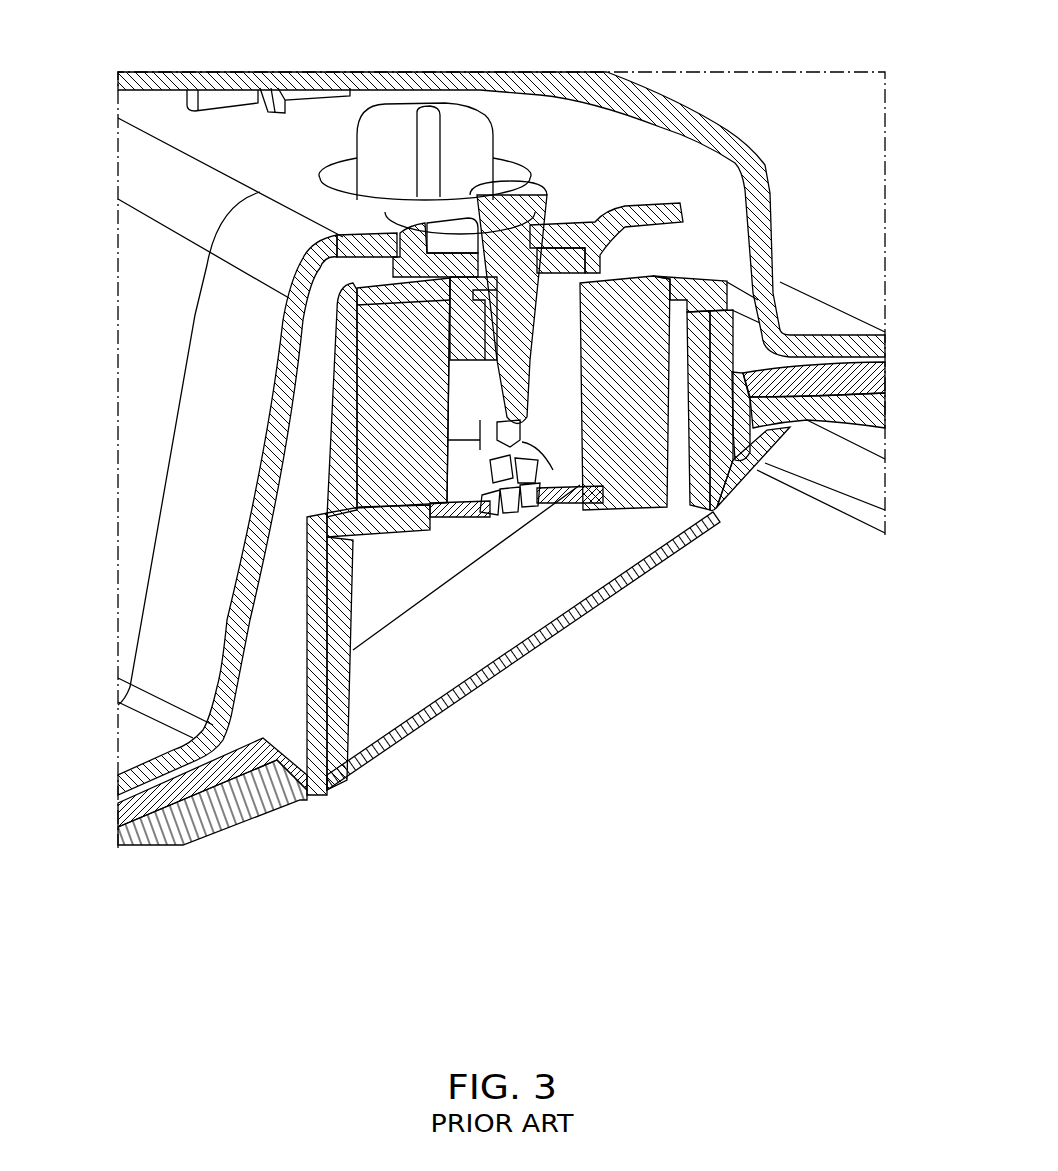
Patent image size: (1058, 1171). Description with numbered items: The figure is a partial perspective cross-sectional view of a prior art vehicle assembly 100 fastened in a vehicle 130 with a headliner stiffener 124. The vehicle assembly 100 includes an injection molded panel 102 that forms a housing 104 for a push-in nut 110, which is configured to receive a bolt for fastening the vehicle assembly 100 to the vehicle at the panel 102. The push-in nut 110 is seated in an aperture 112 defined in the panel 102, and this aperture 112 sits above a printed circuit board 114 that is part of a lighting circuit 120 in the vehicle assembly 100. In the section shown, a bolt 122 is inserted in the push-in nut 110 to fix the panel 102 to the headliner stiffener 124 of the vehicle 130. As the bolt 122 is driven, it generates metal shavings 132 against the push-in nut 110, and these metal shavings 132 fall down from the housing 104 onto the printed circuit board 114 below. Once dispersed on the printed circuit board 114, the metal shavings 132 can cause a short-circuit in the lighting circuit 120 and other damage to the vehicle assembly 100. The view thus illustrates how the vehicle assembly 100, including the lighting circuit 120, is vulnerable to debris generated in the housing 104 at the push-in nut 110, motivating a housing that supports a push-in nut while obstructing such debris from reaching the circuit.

The vehicle assembly 100 is at (699, 229).
The injection molded panel 102 is at (287, 723).
The housing 104 is at (680, 288).
The push-in nut 110 is at (553, 210).
The aperture 112 is at (567, 200).
The printed circuit board (PCB) 114 is at (487, 520).
The lighting circuit 120 is at (690, 672).
The bolt 122 is at (537, 195).
The headliner stiffener 124 is at (150, 377).
The vehicle 130 is at (740, 86).
The metal shavings 132 is at (480, 520).